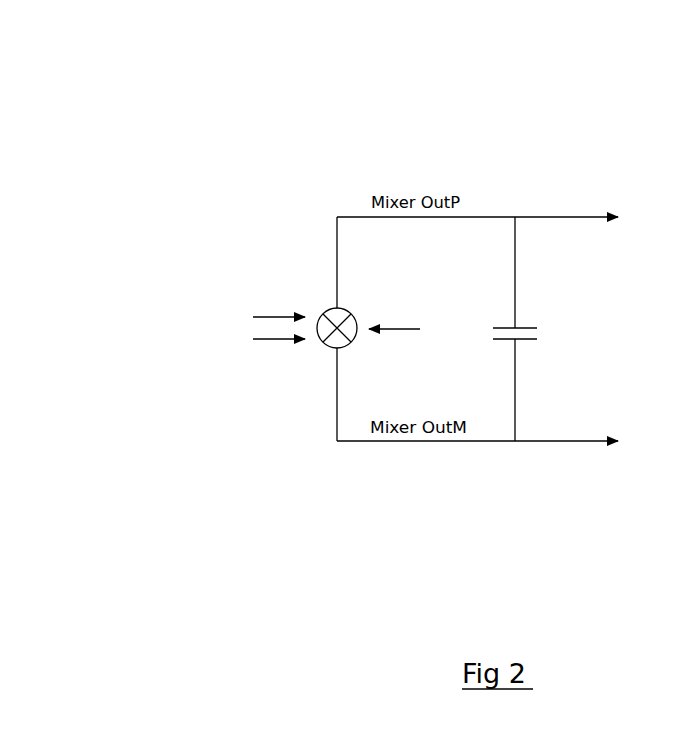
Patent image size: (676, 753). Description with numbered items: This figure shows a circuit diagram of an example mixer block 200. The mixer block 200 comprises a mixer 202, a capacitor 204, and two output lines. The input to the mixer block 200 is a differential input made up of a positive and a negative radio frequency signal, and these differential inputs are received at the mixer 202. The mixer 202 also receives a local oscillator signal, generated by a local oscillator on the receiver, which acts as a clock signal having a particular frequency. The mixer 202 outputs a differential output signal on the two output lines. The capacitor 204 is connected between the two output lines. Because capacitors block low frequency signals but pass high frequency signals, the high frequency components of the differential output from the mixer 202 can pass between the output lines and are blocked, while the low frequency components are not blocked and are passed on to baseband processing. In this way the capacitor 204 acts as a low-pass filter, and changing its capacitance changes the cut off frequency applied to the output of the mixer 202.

The mixer block 200 is at (108, 105).
The mixer 202 is at (333, 310).
The capacitor 204 is at (522, 326).